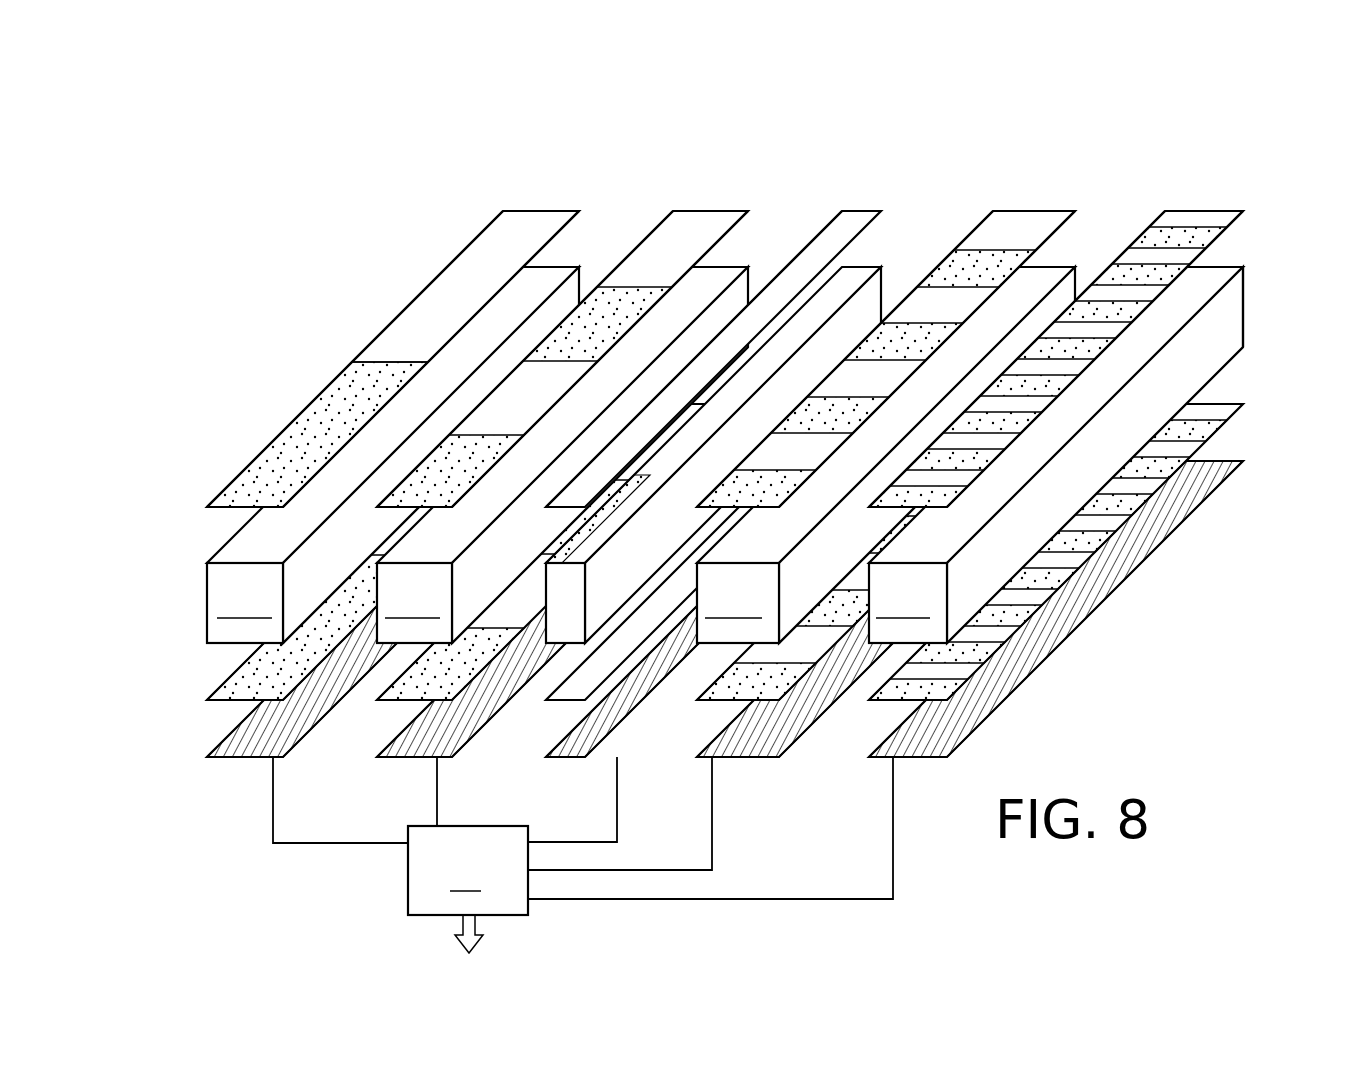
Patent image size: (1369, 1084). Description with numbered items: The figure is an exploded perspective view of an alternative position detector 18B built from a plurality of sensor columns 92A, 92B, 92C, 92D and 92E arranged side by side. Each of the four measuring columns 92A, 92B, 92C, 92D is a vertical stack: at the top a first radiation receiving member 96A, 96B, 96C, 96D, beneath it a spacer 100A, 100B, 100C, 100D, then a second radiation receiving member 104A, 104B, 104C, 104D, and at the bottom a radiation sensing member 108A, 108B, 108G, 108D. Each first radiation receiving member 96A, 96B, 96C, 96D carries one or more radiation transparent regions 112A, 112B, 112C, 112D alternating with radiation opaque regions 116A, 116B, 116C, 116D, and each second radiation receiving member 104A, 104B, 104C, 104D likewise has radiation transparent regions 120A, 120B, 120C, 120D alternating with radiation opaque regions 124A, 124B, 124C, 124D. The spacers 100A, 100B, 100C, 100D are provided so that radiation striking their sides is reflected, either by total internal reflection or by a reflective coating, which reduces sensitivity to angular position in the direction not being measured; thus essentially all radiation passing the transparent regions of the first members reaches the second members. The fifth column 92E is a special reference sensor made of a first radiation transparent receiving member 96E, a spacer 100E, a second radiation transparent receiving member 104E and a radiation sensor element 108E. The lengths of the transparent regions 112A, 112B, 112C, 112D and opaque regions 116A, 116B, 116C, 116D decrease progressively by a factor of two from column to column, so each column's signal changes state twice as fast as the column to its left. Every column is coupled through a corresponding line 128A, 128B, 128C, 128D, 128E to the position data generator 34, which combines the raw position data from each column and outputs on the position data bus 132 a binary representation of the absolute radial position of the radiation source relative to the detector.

The position detector 18B is at (832, 140).
The sensor column 92A is at (538, 204).
The sensor column 92B is at (718, 204).
The sensor column 92C is at (1036, 204).
The sensor column 92D is at (1205, 205).
The sensor column 92E is at (871, 204).
The first radiation receiving member 96A is at (463, 249).
The first radiation receiving member 96B is at (662, 227).
The first radiation receiving member 96C is at (972, 228).
The first radiation receiving member 96D is at (1140, 229).
The first radiation transparent receiving member 96E is at (812, 242).
The radiation transparent region 112A is at (392, 320).
The radiation transparent region 112B is at (640, 242).
The radiation transparent region 112C is at (1060, 232).
The radiation transparent region 112D is at (1248, 212).
The radiation opaque region 116A is at (283, 430).
The radiation opaque region 116B is at (502, 437).
The radiation opaque region 116C is at (703, 492).
The radiation opaque region 116D is at (987, 463).
The spacer 100A is at (393, 455).
The spacer 100B is at (562, 455).
The spacer 100C is at (886, 455).
The spacer 100D is at (1056, 455).
The spacer 100E is at (570, 607).
The radiation transparent region 120A is at (400, 523).
The radiation transparent region 120B is at (503, 602).
The radiation transparent region 120C is at (858, 557).
The radiation transparent region 120D is at (1025, 580).
The radiation opaque region 124A is at (317, 613).
The radiation opaque region 124B is at (413, 672).
The radiation opaque region 124C is at (713, 680).
The radiation opaque region 124D is at (985, 672).
The second radiation receiving member 104A is at (230, 672).
The second radiation receiving member 104B is at (413, 700).
The second radiation receiving member 104C is at (710, 682).
The second radiation receiving member 104D is at (877, 685).
The second radiation transparent receiving member 104E is at (570, 703).
The radiation sensing member 108A is at (218, 748).
The radiation sensing member 108B is at (400, 760).
The base electrode C 108G is at (760, 760).
The radiation sensing member 108D is at (935, 762).
The radiation sensor element 108E is at (563, 760).
The line 128A is at (273, 797).
The line 128B is at (437, 802).
The line 128C is at (712, 848).
The line 128D is at (893, 868).
The line 128E is at (617, 818).
The position data generator 34 is at (468, 870).
The position data bus 132 is at (475, 930).